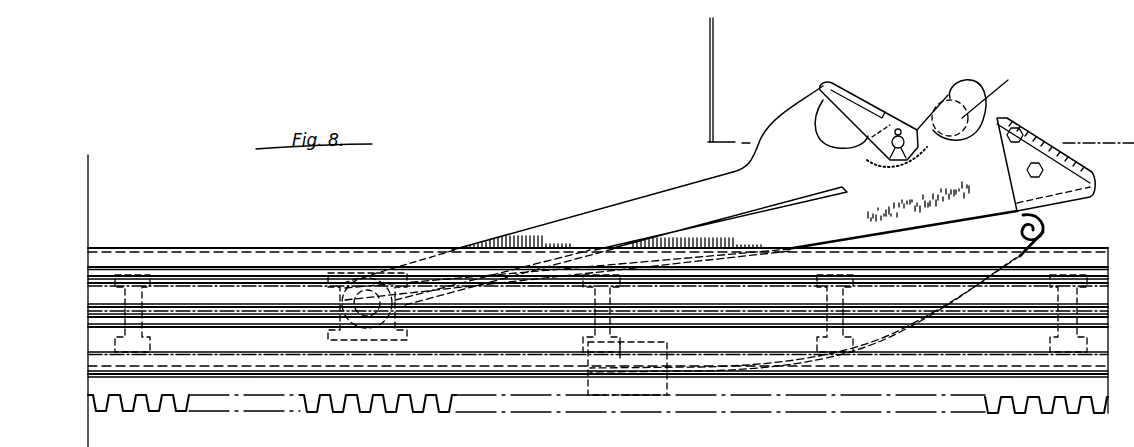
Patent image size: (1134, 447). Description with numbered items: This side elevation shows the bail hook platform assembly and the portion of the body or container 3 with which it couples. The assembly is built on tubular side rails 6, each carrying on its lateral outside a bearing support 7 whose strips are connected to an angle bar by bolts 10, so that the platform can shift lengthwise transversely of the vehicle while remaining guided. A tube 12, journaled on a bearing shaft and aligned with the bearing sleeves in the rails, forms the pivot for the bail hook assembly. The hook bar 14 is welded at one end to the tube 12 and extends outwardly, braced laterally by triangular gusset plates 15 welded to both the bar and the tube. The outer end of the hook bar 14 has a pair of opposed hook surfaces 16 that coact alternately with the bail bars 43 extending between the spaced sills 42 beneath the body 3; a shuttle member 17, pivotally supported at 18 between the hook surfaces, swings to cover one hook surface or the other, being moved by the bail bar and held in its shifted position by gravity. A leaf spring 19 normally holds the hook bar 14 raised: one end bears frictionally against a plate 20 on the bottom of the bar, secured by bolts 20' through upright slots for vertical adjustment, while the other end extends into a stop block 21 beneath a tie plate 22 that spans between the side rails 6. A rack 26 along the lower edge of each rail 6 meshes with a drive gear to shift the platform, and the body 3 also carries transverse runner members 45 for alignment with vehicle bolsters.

The body 3 is at (700, 30).
The side rail 6 is at (303, 247).
The bearing support 7 is at (92, 344).
The bolts 10 is at (143, 297).
The tube 12 is at (347, 283).
The hook bar 14 is at (615, 213).
The gusset plates 15 is at (675, 230).
The hook surfaces 16 is at (817, 130).
The shuttle member 17 is at (865, 112).
The pivot 18 is at (900, 133).
The leaf spring 19 is at (1048, 233).
The plate 20 is at (1058, 165).
The bolts 20' is at (1046, 135).
The stop block 21 is at (640, 390).
The tie plate 22 is at (668, 343).
The rack 26 is at (1013, 390).
The sills 42 is at (1106, 145).
The bail bars 43 is at (943, 95).
The runner members 45 is at (708, 80).